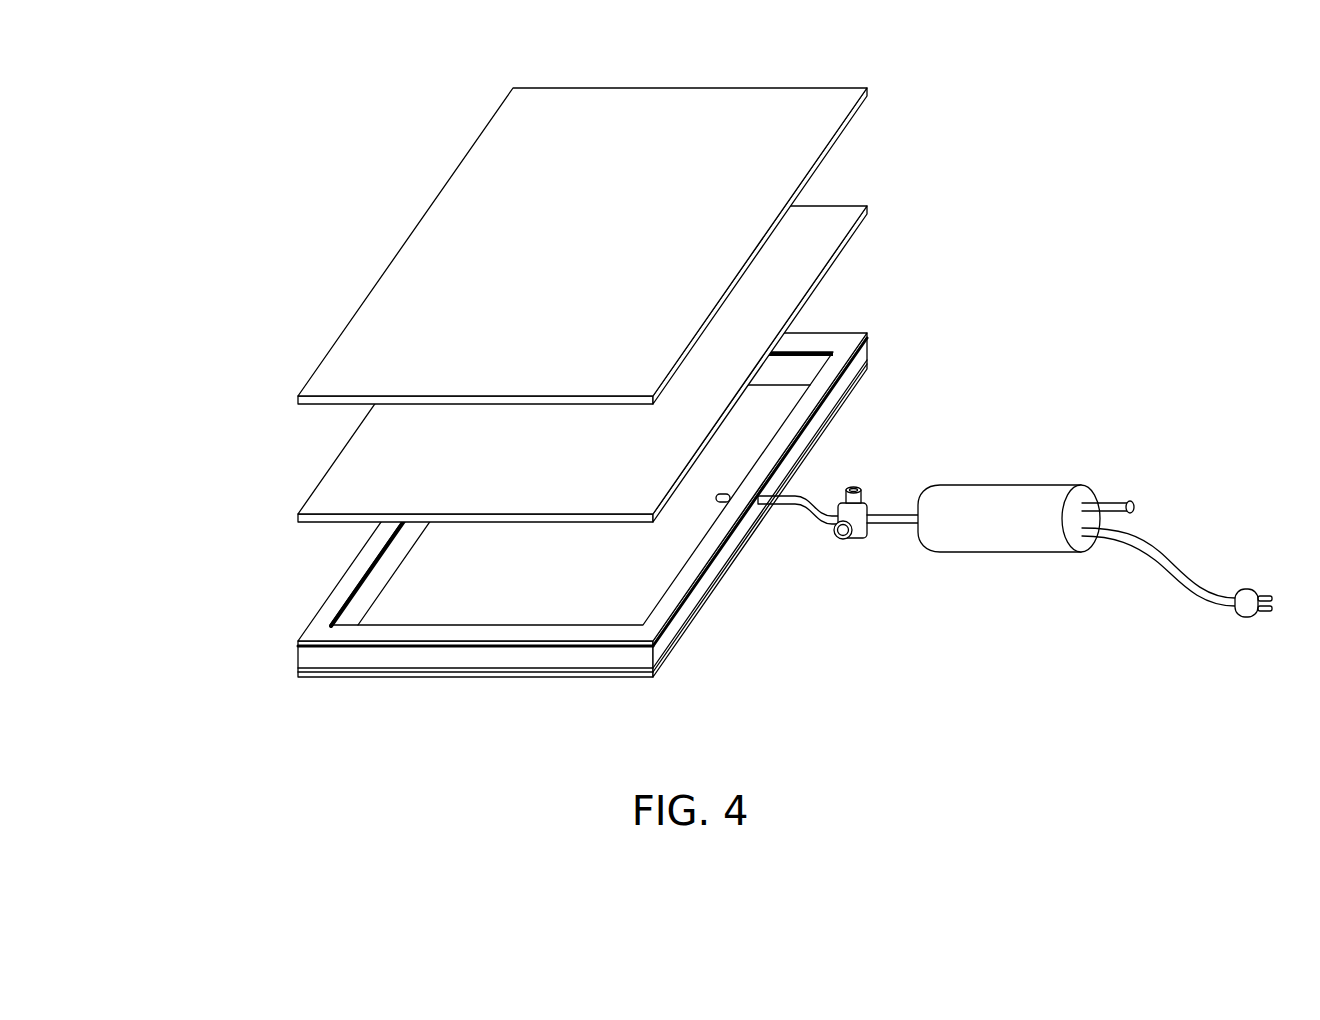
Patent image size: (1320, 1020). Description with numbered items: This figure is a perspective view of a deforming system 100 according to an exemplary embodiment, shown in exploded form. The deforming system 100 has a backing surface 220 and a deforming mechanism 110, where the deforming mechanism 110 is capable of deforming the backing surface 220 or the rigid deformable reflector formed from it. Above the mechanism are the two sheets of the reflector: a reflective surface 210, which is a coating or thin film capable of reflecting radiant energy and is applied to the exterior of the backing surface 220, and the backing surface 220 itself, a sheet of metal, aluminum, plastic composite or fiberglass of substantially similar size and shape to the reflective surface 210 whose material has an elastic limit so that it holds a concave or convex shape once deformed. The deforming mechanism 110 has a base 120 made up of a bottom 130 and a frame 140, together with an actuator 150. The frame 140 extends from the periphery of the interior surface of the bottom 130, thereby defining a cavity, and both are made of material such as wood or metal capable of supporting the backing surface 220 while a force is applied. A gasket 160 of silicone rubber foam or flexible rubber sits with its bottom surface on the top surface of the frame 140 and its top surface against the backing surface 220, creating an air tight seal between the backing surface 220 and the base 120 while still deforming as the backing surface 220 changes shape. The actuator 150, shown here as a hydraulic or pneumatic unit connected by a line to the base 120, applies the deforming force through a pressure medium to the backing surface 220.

The deforming system 100 is at (693, 388).
The deforming mechanism 110 is at (580, 518).
The base 120 is at (270, 612).
The bottom 130 is at (415, 577).
The frame 140 is at (309, 652).
The actuator 150 is at (876, 570).
The gasket 160 is at (685, 580).
The reflective surface 210 is at (788, 135).
The backing surface 220 is at (808, 260).